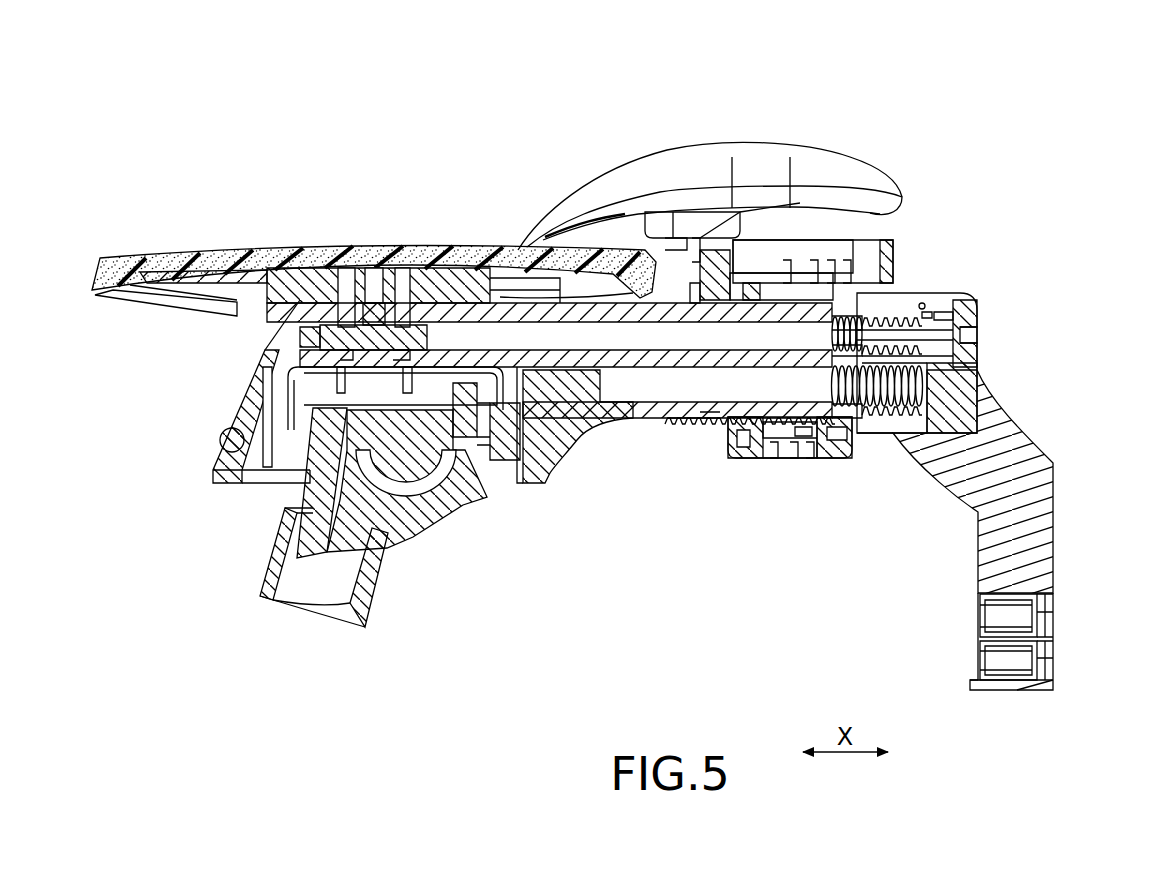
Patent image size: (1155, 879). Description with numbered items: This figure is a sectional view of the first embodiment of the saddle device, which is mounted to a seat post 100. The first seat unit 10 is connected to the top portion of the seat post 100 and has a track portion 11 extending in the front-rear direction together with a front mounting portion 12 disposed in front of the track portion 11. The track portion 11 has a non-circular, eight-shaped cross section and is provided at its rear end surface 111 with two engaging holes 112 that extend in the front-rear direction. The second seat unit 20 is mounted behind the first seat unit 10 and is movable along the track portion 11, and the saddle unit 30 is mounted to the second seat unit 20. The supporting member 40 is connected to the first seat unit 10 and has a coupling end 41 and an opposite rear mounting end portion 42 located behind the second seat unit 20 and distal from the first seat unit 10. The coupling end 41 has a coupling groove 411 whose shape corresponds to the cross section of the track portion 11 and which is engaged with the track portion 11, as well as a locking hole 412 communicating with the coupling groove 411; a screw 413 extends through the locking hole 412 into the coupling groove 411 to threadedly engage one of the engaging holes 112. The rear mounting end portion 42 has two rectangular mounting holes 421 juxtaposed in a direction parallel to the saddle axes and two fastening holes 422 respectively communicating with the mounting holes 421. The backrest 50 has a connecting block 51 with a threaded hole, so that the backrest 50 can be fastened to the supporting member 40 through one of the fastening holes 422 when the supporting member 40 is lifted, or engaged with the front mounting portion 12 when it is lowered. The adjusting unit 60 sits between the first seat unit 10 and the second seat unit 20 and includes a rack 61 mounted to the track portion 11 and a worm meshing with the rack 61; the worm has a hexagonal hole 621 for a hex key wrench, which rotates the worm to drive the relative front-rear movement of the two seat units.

The first seat unit 10 is at (537, 480).
The track portion 11 is at (663, 400).
The rear end surface 111 is at (924, 305).
The engaging holes 112 is at (898, 314).
The front mounting portion 12 is at (425, 277).
The second seat unit 20 is at (744, 462).
The saddle unit 30 is at (749, 147).
The supporting member 40 is at (1057, 493).
The coupling end 41 is at (955, 292).
The coupling groove 411 is at (925, 313).
The locking hole 412 is at (938, 316).
The screw 413 is at (968, 352).
The rear mounting end portion 42 is at (1040, 692).
The mounting holes 421 is at (990, 609).
The fastening holes 422 is at (1043, 608).
The backrest 50 is at (240, 247).
The connecting block 51 is at (343, 344).
The adjusting unit 60 is at (798, 452).
The rack 61 is at (713, 420).
The hexagonal hole 621 is at (812, 435).
The seat post 100 is at (358, 627).